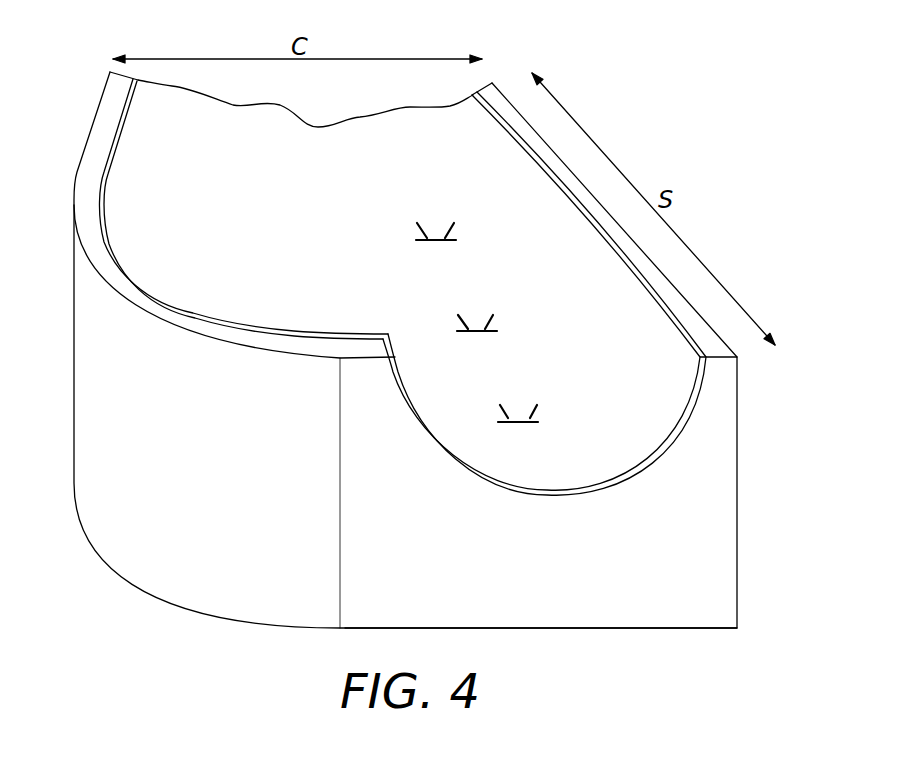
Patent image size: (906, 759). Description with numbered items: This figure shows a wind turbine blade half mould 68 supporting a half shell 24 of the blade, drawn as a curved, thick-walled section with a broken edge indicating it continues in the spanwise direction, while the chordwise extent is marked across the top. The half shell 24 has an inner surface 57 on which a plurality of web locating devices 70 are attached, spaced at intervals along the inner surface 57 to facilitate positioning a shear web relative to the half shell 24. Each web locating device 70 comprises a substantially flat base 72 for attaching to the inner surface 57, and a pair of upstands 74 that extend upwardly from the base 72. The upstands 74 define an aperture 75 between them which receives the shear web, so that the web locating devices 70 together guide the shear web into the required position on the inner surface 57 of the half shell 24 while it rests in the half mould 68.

The half shell 24 is at (687, 410).
The inner surface 57 is at (142, 163).
The wind turbine blade half mould 68 is at (645, 615).
The web locating device 70 is at (405, 234).
The base 72 is at (437, 242).
The upstands 74 is at (494, 320).
The aperture 75 is at (480, 329).